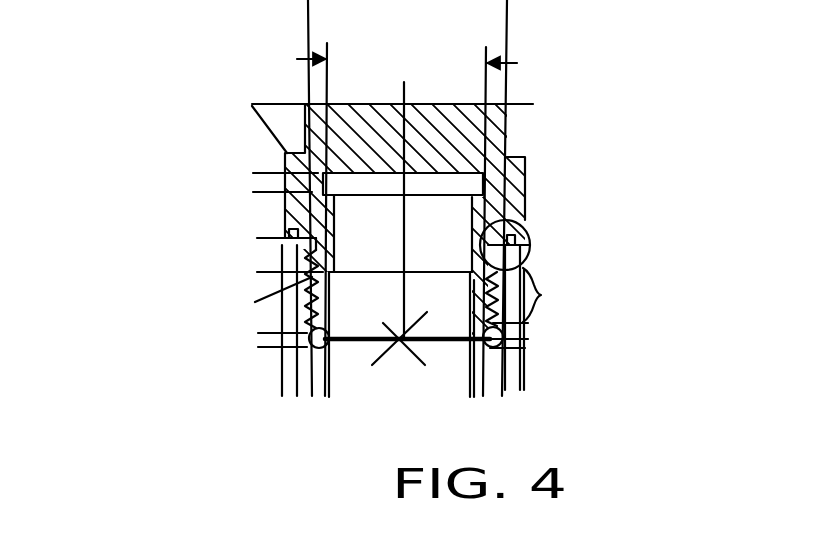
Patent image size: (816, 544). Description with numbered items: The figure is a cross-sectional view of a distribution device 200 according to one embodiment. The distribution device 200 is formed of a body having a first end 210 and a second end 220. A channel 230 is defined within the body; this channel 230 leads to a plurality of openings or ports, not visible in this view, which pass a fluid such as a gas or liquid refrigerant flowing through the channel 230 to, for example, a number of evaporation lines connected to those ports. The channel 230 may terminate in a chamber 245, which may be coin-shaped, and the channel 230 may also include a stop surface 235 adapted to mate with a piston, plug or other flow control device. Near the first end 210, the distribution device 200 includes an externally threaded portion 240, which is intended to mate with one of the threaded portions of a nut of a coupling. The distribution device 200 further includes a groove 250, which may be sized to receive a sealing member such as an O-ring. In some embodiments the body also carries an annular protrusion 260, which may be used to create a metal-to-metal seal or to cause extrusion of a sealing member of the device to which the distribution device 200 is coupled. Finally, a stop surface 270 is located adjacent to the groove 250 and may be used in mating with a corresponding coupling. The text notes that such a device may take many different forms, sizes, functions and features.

The distribution device 200 is at (190, 39).
The first end 210 is at (311, 359).
The second end 220 is at (507, 101).
The channel 230 is at (363, 227).
The stop surface 235 is at (330, 277).
The externally threaded portion 240 is at (541, 295).
The chamber 245 is at (457, 177).
The groove 250 is at (520, 248).
The annular protrusion 260 is at (493, 343).
The stop surface 270 is at (570, 218).